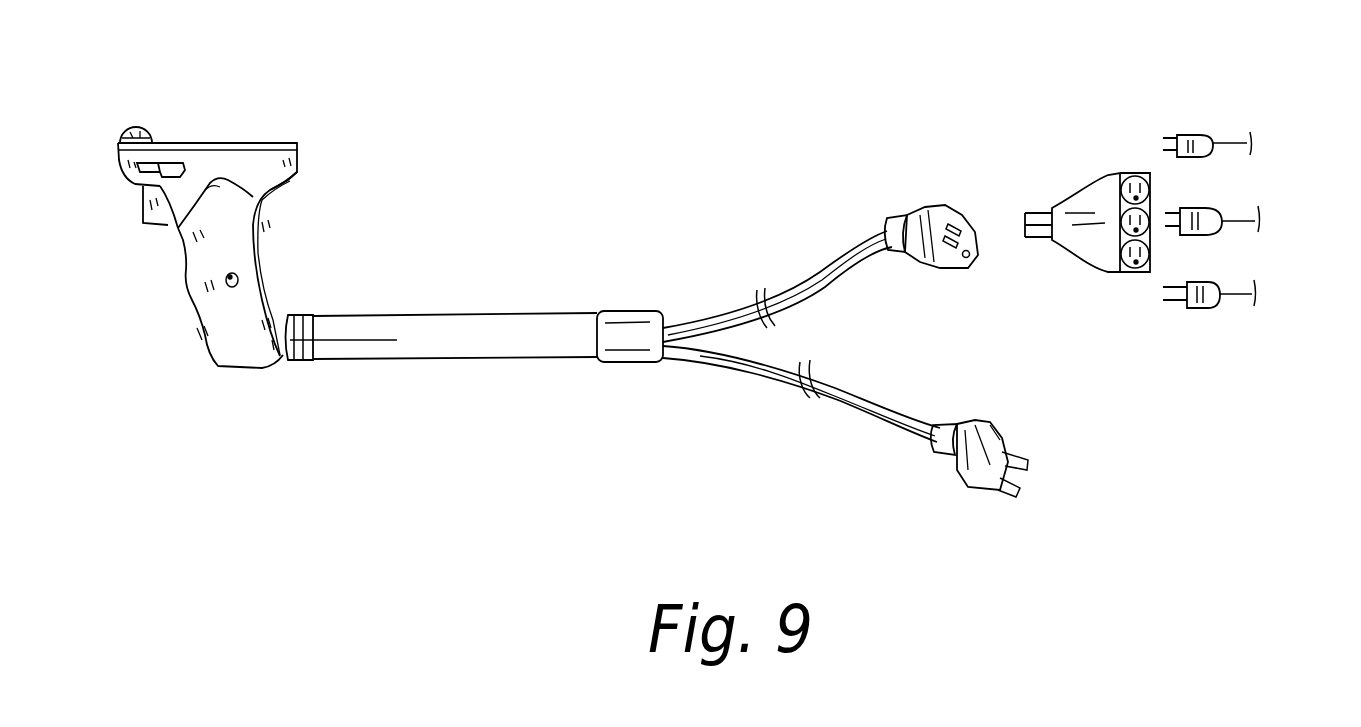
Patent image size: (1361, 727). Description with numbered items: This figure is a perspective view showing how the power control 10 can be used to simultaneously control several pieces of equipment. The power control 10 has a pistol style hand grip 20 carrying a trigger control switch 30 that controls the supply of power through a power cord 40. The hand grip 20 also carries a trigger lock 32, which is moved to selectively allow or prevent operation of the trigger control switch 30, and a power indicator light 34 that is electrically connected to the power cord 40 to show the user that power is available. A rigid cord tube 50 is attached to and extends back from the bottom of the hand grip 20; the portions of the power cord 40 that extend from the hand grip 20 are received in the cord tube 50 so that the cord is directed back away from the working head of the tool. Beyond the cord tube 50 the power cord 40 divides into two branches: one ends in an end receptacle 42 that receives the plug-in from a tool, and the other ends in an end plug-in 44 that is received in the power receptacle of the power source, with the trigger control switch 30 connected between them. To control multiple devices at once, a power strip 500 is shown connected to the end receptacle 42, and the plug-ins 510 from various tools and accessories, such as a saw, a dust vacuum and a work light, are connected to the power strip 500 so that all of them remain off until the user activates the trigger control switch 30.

The power control 10 is at (478, 160).
The hand grip 20 is at (242, 257).
The trigger control switch 30 is at (148, 226).
The trigger lock 32 is at (165, 167).
The power indicator light 34 is at (138, 128).
The power cord 40 is at (800, 266).
The end receptacle 42 is at (927, 262).
The end plug-in 44 is at (967, 482).
The cord tube 50 is at (505, 342).
The power strip 500 is at (1098, 200).
The plug-ins 510 is at (1195, 132).